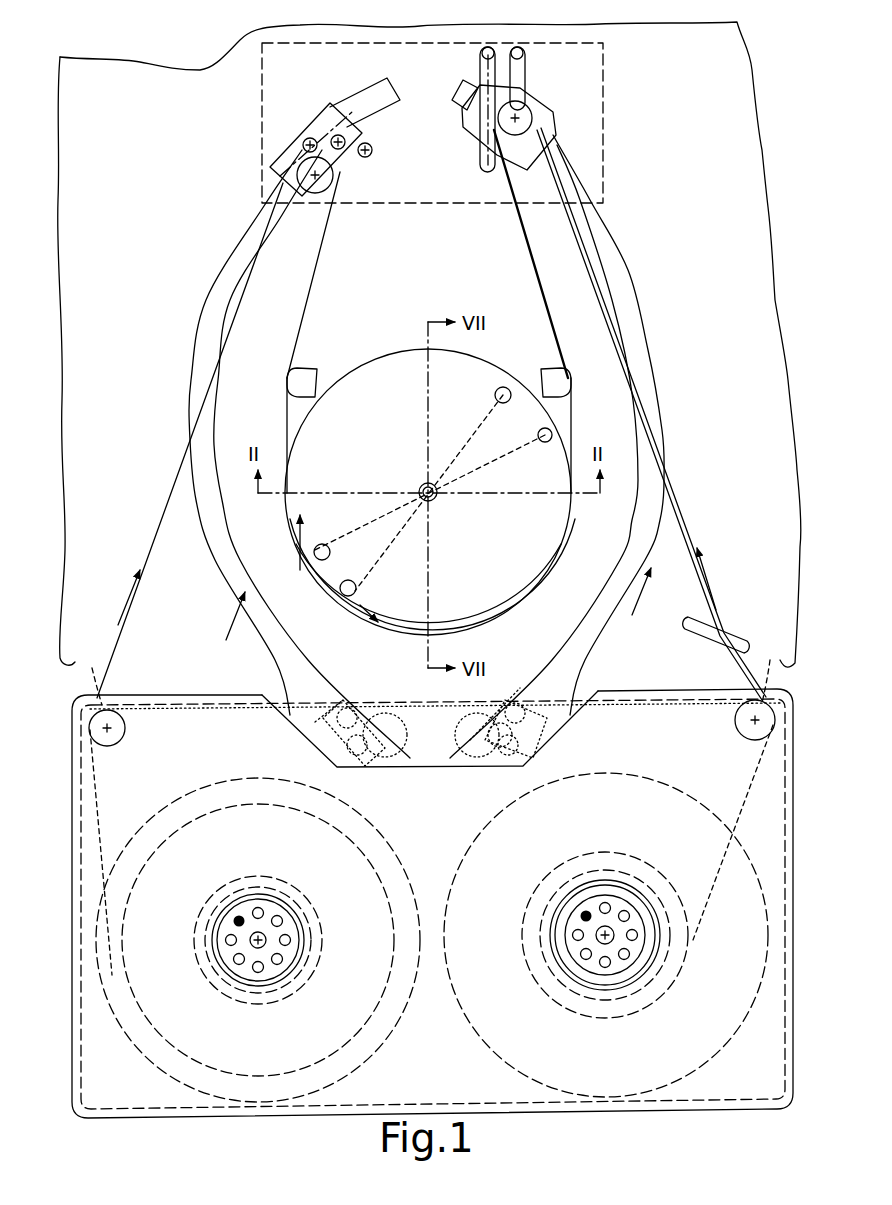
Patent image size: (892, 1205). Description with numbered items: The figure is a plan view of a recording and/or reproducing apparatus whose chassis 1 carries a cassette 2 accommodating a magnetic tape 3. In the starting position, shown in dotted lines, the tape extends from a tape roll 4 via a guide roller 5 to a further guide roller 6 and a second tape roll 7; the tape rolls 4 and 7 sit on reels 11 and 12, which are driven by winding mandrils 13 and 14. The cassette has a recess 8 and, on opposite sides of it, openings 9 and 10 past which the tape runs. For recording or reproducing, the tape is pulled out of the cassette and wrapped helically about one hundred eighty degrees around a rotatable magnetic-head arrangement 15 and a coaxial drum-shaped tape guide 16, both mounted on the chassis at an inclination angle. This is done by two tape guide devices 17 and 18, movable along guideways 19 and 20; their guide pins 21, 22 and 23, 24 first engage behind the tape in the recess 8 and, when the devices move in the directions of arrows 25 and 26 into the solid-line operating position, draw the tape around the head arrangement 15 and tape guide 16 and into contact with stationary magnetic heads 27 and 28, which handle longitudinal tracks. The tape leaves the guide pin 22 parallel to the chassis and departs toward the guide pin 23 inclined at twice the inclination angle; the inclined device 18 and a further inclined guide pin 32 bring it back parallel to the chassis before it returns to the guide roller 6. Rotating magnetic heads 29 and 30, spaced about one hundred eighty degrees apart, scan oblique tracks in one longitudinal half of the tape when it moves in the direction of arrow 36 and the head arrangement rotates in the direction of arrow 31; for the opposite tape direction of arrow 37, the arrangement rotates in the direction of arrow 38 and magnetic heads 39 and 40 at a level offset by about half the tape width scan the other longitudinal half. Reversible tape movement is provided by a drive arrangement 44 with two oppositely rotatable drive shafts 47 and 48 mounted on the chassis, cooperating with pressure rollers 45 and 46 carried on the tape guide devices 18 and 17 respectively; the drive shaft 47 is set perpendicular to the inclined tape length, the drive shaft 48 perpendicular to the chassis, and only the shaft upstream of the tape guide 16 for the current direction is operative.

The chassis 1 is at (152, 66).
The cassette 2 is at (185, 694).
The magnetic tape 3 is at (166, 506).
The tape roll 4 is at (238, 808).
The guide roller 5 is at (120, 742).
The guide roller 6 is at (736, 722).
The tape roll 7 is at (630, 863).
The recess 8 is at (590, 700).
The opening 9 is at (92, 677).
The opening 10 is at (773, 671).
The reel 11 is at (272, 805).
The reel 12 is at (670, 805).
The winding mandril 13 is at (238, 920).
The winding mandril 14 is at (586, 915).
The rotatable magnetic-head arrangement 15 is at (484, 478).
The drum-shaped tape guide 16 is at (398, 348).
The tape guide device 17 is at (290, 143).
The tape guide device 18 is at (460, 128).
The guideway 19 is at (224, 272).
The guideway 20 is at (636, 270).
The guide pin 21 is at (310, 138).
The guide pin 22 is at (338, 135).
The guide pin 23 is at (482, 55).
The guide pin 24 is at (523, 53).
The arrow 25 is at (232, 618).
The arrow 26 is at (640, 588).
The stationary magnetic head 27 is at (306, 372).
The stationary magnetic head 28 is at (547, 378).
The magnetic head 29 is at (356, 590).
The magnetic head 30 is at (500, 393).
The arrow 31 is at (376, 616).
The guide pin 32 is at (732, 635).
The arrow 36 is at (130, 592).
The arrow 37 is at (703, 578).
The arrow 38 is at (304, 530).
The magnetic head 39 is at (548, 438).
The magnetic head 40 is at (328, 552).
The drive arrangement 44 is at (412, 205).
The pressure roller 45 is at (530, 112).
The pressure roller 46 is at (332, 180).
The drive shaft 47 is at (485, 150).
The drive shaft 48 is at (372, 152).